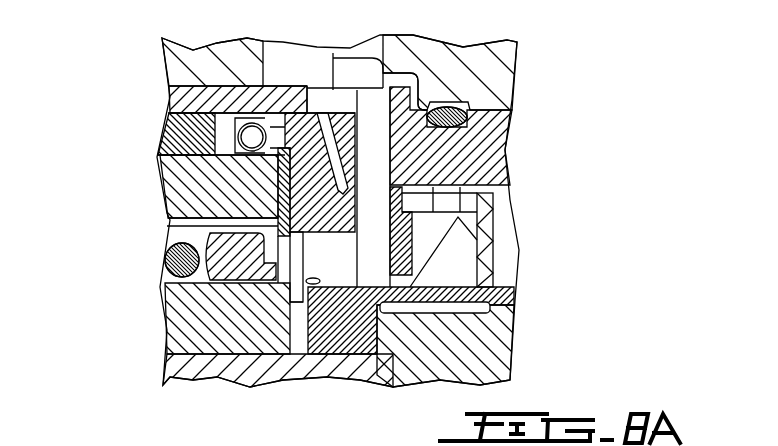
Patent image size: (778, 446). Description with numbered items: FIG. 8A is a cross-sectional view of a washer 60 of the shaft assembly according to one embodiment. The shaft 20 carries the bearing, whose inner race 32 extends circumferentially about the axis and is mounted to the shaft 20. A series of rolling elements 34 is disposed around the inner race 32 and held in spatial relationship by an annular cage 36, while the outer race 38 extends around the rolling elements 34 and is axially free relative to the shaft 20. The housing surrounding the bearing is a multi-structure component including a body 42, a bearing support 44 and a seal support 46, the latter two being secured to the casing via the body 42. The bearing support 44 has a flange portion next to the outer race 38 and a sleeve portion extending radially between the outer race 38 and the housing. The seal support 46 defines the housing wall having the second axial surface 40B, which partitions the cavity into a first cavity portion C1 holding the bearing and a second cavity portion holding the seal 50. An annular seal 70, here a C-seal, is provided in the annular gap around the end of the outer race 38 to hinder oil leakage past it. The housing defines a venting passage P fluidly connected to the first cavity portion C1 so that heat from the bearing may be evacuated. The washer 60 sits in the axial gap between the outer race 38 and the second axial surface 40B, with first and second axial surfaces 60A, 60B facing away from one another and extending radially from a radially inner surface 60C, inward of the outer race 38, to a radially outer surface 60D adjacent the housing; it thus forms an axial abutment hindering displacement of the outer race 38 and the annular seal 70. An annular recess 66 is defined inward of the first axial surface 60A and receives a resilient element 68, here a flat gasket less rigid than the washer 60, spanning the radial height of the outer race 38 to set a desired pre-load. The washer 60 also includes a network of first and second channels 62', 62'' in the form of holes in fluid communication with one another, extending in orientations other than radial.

The shaft 20 is at (225, 362).
The inner race 32 is at (200, 326).
The rolling elements 34 is at (200, 214).
The annular cage 36 is at (207, 250).
The outer race 38 is at (195, 175).
The second axial surface of the housing 40B is at (345, 313).
The body 42 is at (168, 44).
The bearing support 44 is at (172, 126).
The seal support 46 is at (178, 95).
The seal 50 is at (440, 257).
The washer 60 is at (300, 112).
The first axial surface of the washer 60A is at (235, 127).
The second axial surface of the washer 60B is at (412, 228).
The radially inner surface of the washer 60C is at (302, 262).
The radially outer surface of the washer 60D is at (344, 112).
The first channel 62' is at (496, 101).
The second channel 62'' is at (452, 239).
The annular recess 66 is at (195, 188).
The resilient element 68 is at (175, 244).
The annular seal 70 is at (262, 86).
The venting passage P is at (333, 53).
The first cavity portion C1 is at (322, 313).